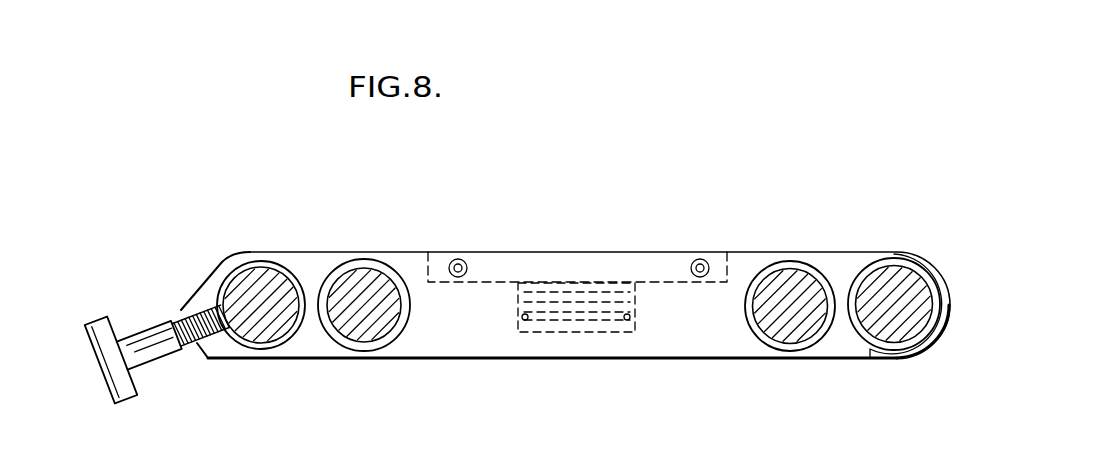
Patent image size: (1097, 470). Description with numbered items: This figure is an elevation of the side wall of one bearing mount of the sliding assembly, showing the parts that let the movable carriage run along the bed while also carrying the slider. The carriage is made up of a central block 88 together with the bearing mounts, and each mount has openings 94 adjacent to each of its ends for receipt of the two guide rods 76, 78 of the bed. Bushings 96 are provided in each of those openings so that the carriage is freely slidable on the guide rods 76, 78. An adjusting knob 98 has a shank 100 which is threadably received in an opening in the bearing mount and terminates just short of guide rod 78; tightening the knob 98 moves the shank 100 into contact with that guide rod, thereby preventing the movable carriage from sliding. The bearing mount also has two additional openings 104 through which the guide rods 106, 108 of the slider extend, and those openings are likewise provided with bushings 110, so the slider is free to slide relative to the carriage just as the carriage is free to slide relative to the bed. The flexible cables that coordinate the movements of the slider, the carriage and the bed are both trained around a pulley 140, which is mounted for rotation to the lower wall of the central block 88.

The guide rod 76 is at (877, 268).
The guide rod 78 is at (263, 270).
The central block 88 is at (492, 252).
The openings 94 is at (888, 360).
The bushings 96 is at (914, 281).
The adjusting knob 98 is at (107, 388).
The shank 100 is at (177, 323).
The additional openings 104 is at (752, 328).
The guide rod 106 is at (802, 343).
The guide rod 108 is at (338, 337).
The bushings 110 is at (764, 285).
The pulley 140 is at (605, 332).